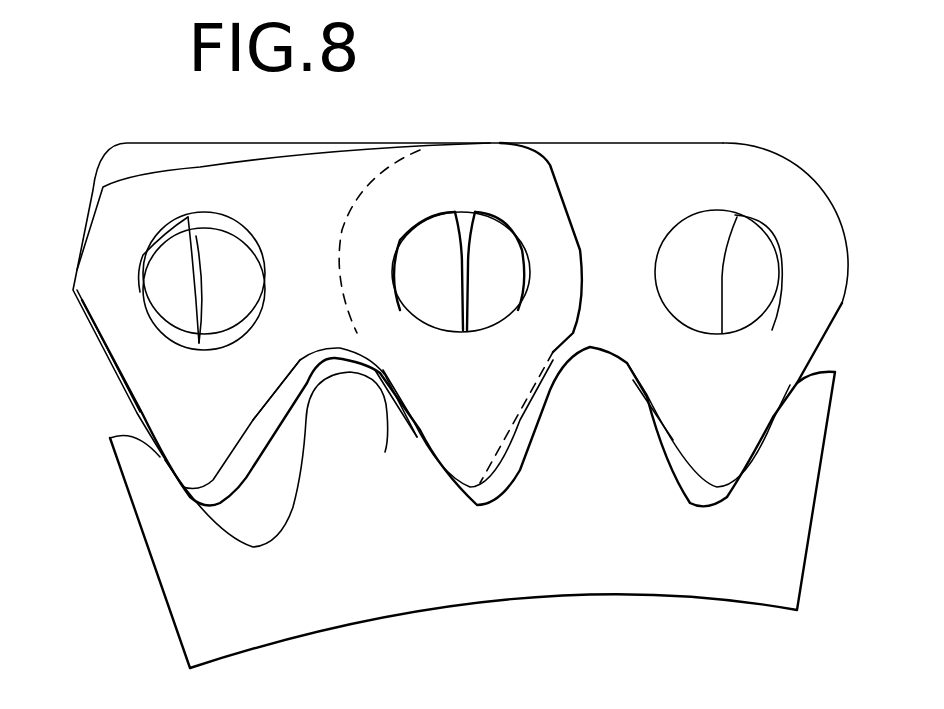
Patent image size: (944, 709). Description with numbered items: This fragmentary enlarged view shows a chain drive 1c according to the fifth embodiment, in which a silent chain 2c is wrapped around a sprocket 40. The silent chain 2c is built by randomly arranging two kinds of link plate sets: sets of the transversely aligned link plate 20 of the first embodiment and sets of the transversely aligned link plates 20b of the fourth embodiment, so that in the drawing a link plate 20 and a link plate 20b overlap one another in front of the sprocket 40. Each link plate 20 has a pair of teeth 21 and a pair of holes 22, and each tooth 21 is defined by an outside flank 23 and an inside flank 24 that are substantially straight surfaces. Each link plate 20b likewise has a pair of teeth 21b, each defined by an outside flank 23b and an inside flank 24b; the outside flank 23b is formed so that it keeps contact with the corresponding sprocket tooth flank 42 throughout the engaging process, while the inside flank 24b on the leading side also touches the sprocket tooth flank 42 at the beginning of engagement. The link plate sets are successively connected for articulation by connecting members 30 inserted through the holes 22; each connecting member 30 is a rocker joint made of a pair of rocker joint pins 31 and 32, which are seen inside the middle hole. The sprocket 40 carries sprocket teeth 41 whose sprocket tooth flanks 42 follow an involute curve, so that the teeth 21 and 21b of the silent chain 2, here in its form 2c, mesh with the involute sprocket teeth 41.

The chain drive 1c is at (796, 158).
The silent chain 2 is at (460, 213).
The silent chain 2c is at (492, 140).
The link plate 20 is at (332, 173).
The link plate 20b is at (635, 172).
The tooth 21 is at (212, 437).
The tooth 21b is at (735, 437).
The hole 22 is at (237, 228).
The outside flank 23 is at (137, 410).
The inside flank 24 is at (253, 407).
The outside flank 23b is at (391, 400).
The inside flank 24b is at (527, 447).
The connecting member 30 is at (470, 211).
The rocker joint pin 31 is at (423, 253).
The rocker joint pin 32 is at (512, 251).
The sprocket 40 is at (582, 569).
The sprocket tooth 41 is at (372, 415).
The sprocket tooth flank 42 is at (300, 450).